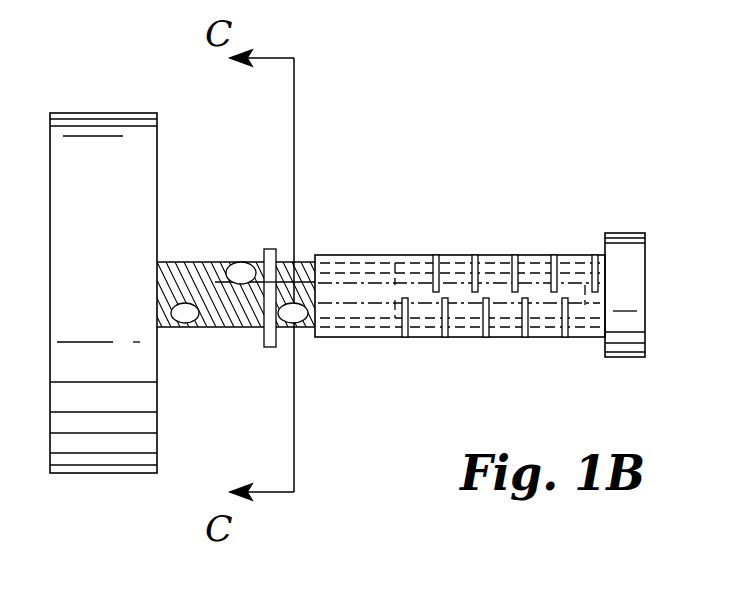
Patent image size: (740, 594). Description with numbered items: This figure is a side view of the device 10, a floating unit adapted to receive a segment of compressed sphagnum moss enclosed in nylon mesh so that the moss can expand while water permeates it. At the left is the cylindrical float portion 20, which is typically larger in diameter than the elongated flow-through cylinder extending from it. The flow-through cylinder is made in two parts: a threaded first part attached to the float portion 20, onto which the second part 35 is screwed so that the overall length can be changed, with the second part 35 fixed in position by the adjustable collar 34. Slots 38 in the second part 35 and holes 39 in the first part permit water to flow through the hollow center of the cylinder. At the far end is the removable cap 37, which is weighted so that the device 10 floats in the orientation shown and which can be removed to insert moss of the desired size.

The device 10 is at (389, 142).
The float portion 20 is at (97, 454).
The adjustable collar 34 is at (265, 250).
The second part 35 is at (393, 255).
The removable cap 37 is at (622, 240).
The slots 38 is at (445, 257).
The holes 39 is at (186, 322).